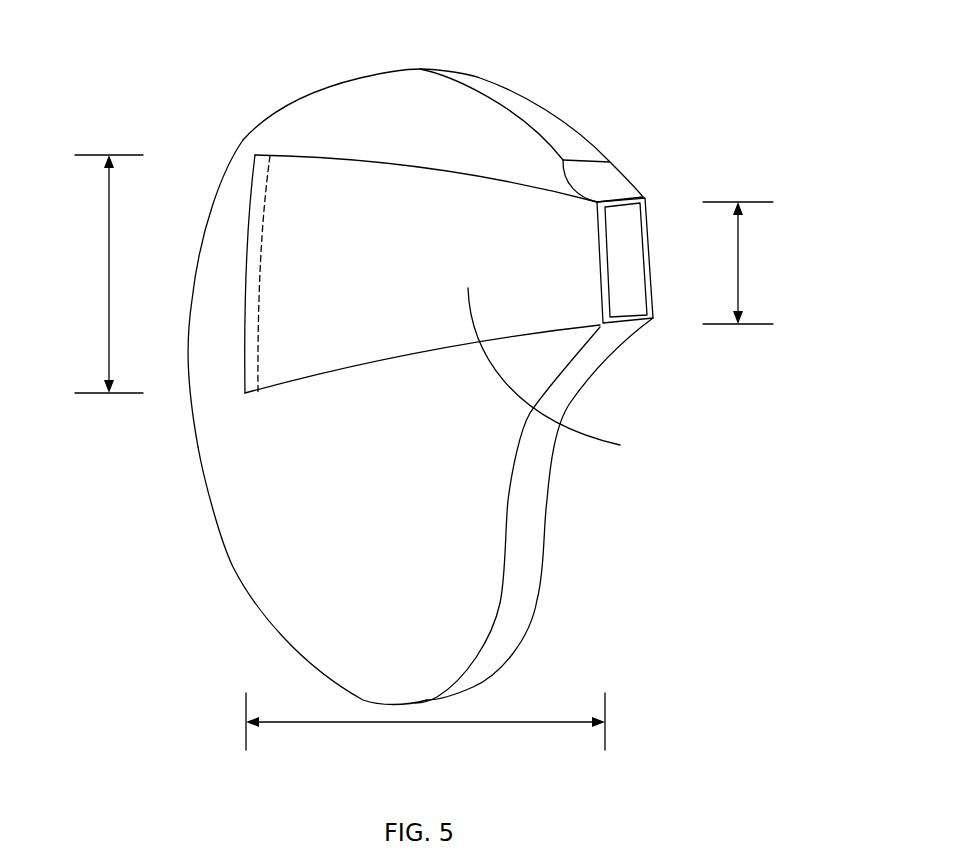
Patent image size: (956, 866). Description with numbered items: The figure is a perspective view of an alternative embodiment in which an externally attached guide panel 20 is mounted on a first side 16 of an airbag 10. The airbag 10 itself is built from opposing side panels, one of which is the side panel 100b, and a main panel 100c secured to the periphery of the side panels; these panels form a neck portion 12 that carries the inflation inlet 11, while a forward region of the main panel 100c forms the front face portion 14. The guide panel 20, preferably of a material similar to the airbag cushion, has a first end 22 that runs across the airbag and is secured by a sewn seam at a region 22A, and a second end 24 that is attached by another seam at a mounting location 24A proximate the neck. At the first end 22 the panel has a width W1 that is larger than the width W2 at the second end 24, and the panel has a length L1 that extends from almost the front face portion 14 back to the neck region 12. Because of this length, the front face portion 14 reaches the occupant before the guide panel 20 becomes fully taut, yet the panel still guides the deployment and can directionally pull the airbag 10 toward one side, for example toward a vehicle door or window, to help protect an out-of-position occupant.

The airbag 10 is at (378, 363).
The inflation inlet 11 is at (638, 265).
The neck portion 12 is at (630, 116).
The front face portion 14 is at (187, 318).
The first side 16 is at (403, 108).
The guide panel 20 is at (562, 373).
The first end 22 is at (325, 266).
The securing location 22A is at (275, 405).
The second end 24 is at (595, 313).
The mounting location 24A is at (565, 163).
The side panel 100b is at (263, 543).
The main panel 100c is at (538, 122).
The panel width W1 is at (109, 273).
The panel width W2 is at (738, 262).
The length L1 is at (423, 722).